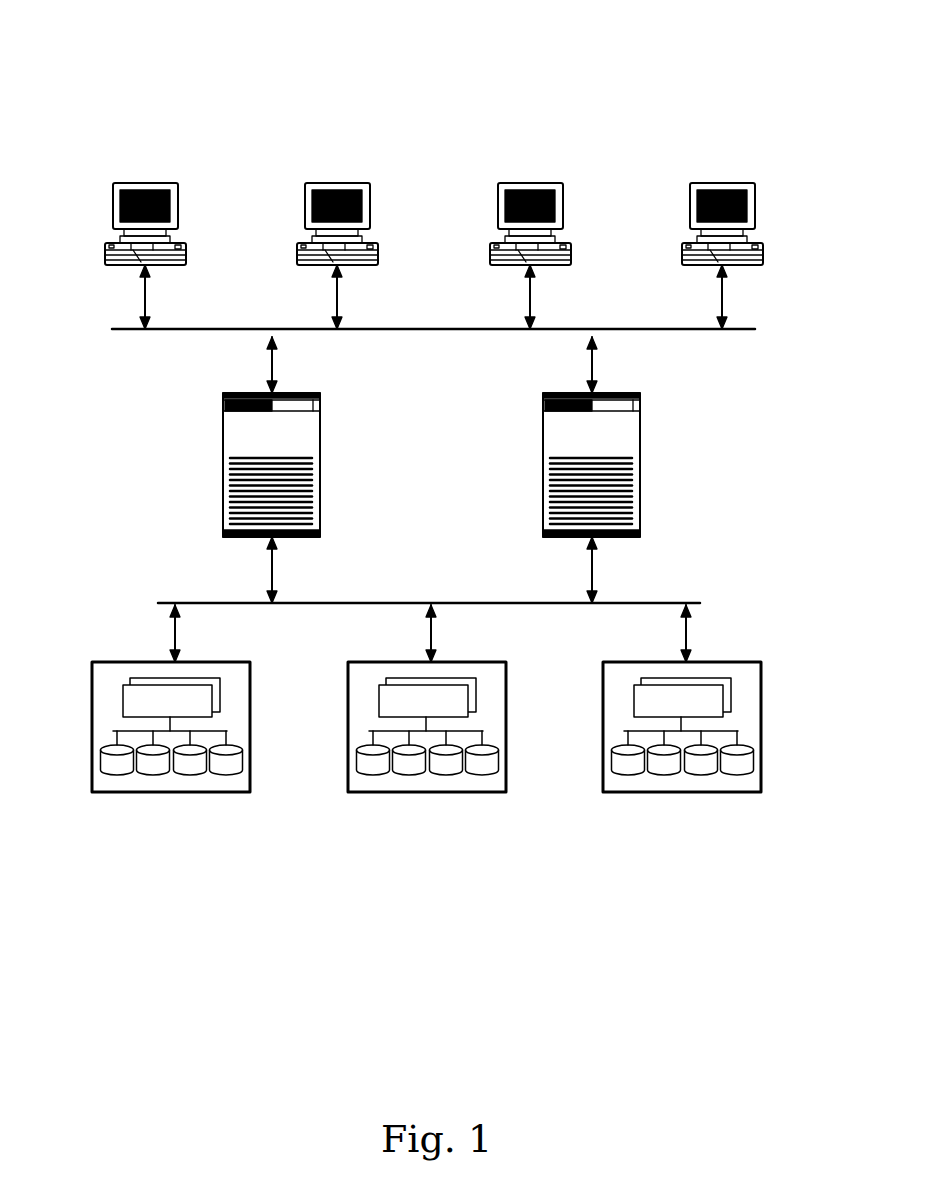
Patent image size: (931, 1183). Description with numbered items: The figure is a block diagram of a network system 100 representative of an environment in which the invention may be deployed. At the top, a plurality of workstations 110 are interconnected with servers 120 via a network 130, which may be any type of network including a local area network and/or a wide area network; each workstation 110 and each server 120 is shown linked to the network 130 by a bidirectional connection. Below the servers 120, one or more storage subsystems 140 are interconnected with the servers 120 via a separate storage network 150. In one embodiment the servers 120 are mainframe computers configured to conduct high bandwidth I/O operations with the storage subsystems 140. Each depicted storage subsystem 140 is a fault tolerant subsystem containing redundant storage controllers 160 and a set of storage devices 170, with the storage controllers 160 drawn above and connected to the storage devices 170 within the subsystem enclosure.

The network system 100 is at (74, 53).
The workstation 110 is at (181, 184).
The server 120 is at (320, 395).
The network 130 is at (430, 328).
The storage subsystem 140 is at (250, 662).
The storage network 150 is at (365, 602).
The storage controller 160 is at (123, 699).
The storage device 170 is at (100, 759).